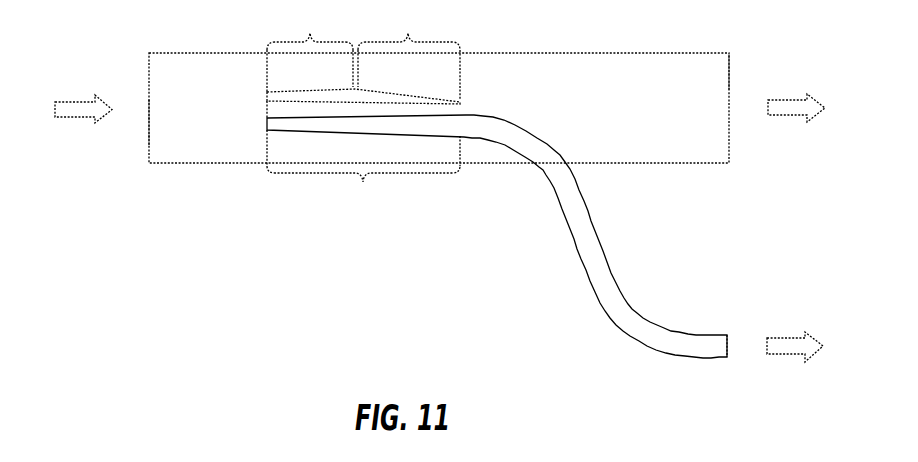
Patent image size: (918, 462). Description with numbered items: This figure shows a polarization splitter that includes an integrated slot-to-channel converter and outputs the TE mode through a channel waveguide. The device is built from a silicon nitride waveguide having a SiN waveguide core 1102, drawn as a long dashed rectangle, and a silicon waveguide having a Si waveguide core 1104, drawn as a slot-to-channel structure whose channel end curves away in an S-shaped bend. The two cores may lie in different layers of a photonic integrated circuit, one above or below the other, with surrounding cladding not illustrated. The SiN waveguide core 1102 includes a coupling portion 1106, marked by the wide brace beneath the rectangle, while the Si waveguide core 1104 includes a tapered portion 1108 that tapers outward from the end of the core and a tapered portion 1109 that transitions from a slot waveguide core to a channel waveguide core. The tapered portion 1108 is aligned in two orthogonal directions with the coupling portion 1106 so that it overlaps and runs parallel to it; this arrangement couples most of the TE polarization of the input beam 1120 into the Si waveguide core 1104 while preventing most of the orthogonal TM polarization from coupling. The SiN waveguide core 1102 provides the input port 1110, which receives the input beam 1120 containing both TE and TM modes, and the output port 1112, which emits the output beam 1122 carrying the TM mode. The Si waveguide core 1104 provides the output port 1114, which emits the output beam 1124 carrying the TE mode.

The SiN waveguide core 1102 is at (543, 53).
The Si waveguide core 1104 is at (556, 178).
The coupling portion 1106 is at (363, 189).
The tapered portion 1108 is at (310, 85).
The tapered portion 1109 is at (363, 85).
The input port 1110 is at (149, 123).
The output port 1112 is at (731, 65).
The output port 1114 is at (731, 337).
The input beam 1120 is at (79, 118).
The output beam 1122 is at (791, 117).
The output beam 1124 is at (791, 356).